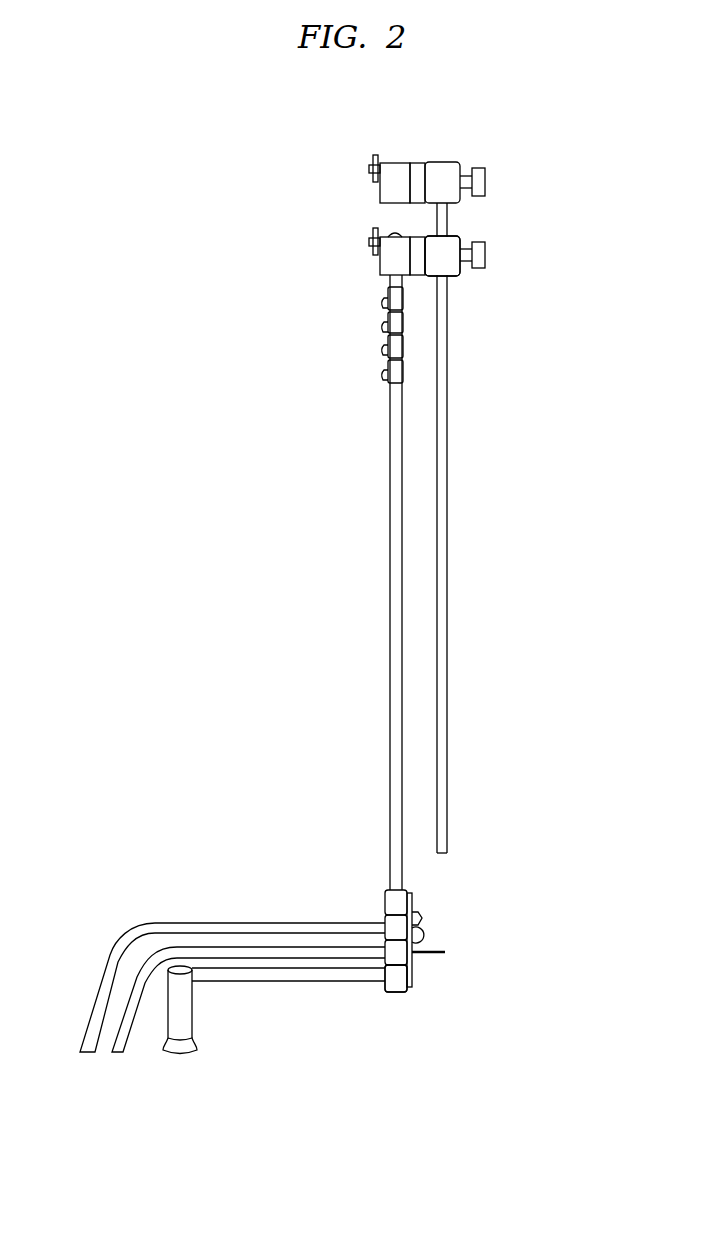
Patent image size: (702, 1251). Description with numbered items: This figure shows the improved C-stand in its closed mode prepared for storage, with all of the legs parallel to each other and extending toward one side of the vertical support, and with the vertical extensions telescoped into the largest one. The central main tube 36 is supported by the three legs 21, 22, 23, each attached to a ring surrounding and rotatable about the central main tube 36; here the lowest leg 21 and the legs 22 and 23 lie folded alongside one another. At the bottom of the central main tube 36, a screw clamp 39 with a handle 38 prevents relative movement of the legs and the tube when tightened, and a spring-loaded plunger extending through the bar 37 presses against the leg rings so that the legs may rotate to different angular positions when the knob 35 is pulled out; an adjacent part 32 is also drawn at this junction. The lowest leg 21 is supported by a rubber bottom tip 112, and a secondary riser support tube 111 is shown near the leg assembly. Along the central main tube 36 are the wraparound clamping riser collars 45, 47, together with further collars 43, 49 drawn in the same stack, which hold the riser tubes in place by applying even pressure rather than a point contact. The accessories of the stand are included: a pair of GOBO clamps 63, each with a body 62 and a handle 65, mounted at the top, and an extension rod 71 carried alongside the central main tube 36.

The lowest leg 21 is at (297, 983).
The leg 22 is at (265, 946).
The leg 23 is at (212, 922).
The connector port 32 is at (448, 952).
The knob 35 is at (421, 938).
The central main tube 36 is at (390, 743).
The bar 37 is at (412, 975).
The handle 38 is at (417, 913).
The screw clamp 39 is at (385, 898).
The fitting 43 is at (381, 375).
The wraparound clamping riser collar 45 is at (381, 349).
The wraparound clamping riser collar 47 is at (381, 326).
The fitting 49 is at (381, 301).
The valve body 62 is at (462, 273).
The GOBO clamp 63 is at (438, 162).
The valve handle 65 is at (372, 233).
The extension rod 71 is at (447, 222).
The secondary riser support tube 111 is at (193, 1015).
The rubber bottom tip 112 is at (180, 1057).